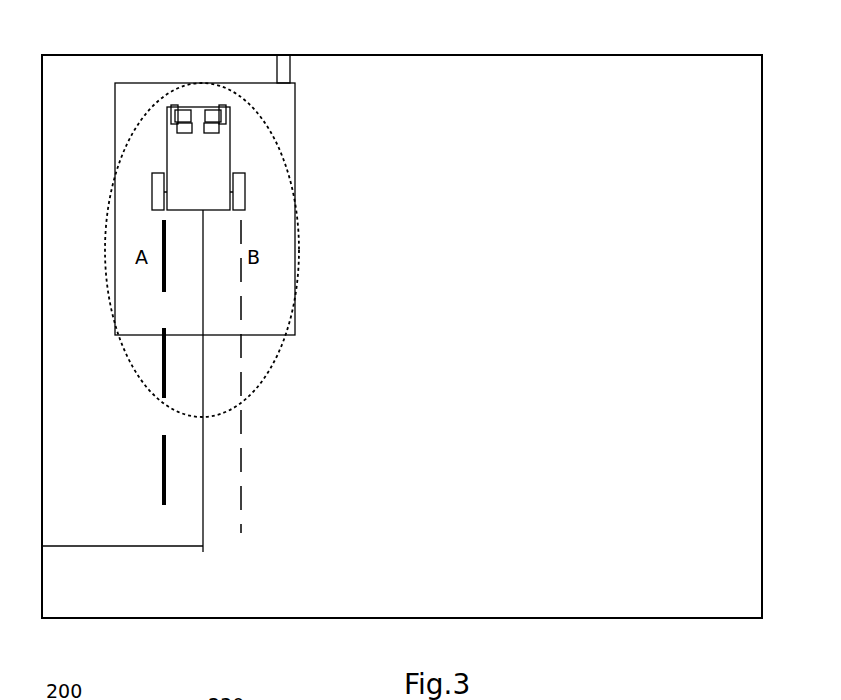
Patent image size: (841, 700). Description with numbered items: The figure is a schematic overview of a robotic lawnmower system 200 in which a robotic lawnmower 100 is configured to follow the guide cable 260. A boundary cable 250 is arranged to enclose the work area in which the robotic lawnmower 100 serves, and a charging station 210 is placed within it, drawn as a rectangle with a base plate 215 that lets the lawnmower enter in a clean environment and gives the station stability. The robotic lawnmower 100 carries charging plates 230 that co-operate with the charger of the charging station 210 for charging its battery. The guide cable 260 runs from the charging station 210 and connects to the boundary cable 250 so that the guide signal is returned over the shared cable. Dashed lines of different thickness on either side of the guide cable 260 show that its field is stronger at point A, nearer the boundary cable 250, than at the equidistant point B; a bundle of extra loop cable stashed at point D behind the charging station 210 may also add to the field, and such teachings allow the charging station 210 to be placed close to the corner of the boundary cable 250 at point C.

The robotic lawnmower 100 is at (198, 158).
The robotic working tool system 200 is at (152, 78).
The charging station 210 is at (296, 232).
The base plate 215 is at (265, 138).
The charging plates 230 is at (186, 108).
The boundary cable 250 is at (633, 617).
The guide cable 260 is at (140, 547).